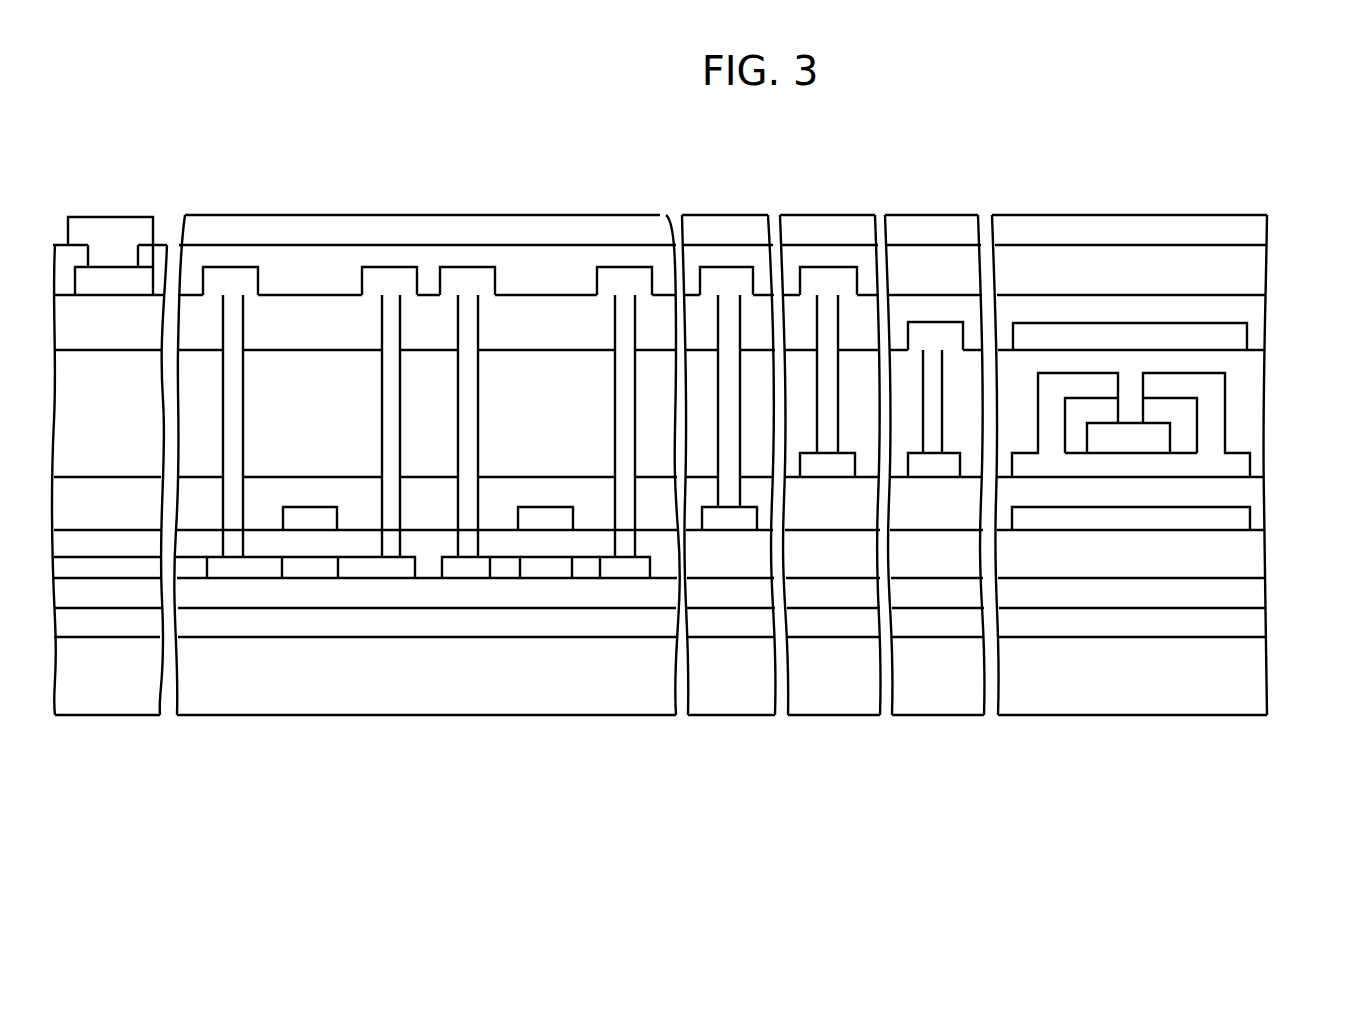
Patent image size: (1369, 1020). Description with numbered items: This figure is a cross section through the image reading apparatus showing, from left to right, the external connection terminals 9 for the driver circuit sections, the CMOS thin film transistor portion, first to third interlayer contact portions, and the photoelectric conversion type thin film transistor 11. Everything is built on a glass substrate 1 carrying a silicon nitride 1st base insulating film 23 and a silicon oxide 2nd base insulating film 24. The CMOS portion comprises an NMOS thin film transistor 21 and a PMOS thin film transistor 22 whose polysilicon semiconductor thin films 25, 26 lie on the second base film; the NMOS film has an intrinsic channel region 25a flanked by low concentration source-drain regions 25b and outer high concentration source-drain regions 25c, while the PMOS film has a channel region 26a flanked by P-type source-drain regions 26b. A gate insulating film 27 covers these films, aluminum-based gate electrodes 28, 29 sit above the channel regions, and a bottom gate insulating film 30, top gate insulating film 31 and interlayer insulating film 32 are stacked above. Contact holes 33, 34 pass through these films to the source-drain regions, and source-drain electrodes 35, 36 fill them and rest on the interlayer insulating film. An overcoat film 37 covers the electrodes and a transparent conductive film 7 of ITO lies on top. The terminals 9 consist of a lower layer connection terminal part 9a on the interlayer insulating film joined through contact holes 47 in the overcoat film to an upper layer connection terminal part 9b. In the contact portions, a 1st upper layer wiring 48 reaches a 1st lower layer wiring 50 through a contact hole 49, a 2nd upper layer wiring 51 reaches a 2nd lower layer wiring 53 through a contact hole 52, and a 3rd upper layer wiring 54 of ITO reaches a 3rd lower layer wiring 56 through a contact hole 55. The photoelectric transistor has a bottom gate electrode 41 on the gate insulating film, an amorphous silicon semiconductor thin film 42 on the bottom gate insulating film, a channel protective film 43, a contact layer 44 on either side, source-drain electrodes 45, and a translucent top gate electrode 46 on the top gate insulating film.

The glass substrate 1 is at (1268, 677).
The transparent conductive film 7 is at (1268, 222).
The external connection terminals 9 is at (148, 135).
The lower layer connection terminal part 9a is at (110, 278).
The upper layer connection terminal part 9b is at (122, 228).
The photoelectric conversion type thin film transistor 11 is at (1048, 528).
The NMOS thin film transistor 21 is at (452, 586).
The PMOS thin film transistor 22 is at (216, 586).
The 1st base insulating film 23 is at (1268, 625).
The 2nd base insulating film 24 is at (1268, 593).
The semiconductor thin film 25 is at (437, 770).
The channel region 25a is at (543, 580).
The source-drain regions 25b is at (507, 580).
The source-drain regions 25c is at (475, 580).
The semiconductor thin film 26 is at (385, 770).
The channel region 26a is at (306, 580).
The source-drain regions 26b is at (262, 580).
The gate insulating film 27 is at (1268, 555).
The gate electrode 28 is at (540, 518).
The gate electrode 29 is at (310, 518).
The bottom gate insulating film 30 is at (1268, 502).
The top gate insulating film 31 is at (1268, 385).
The interlayer insulating film 32 is at (1268, 318).
The contact holes 33 is at (478, 390).
The contact holes 34 is at (243, 390).
The source-drain electrodes 35 is at (467, 282).
The source-drain electrodes 36 is at (232, 282).
The overcoat film 37 is at (1268, 265).
The bottom gate electrode 41 is at (1091, 520).
The semiconductor thin film 42 is at (1170, 468).
The channel protective film 43 is at (1129, 445).
The contact layer 44 is at (1093, 410).
The source-drain electrodes 45 is at (1053, 385).
The top gate electrode 46 is at (1124, 337).
The contact holes 47 is at (95, 260).
The 1st upper layer wiring 48 is at (728, 282).
The contact hole 49 is at (733, 373).
The 1st lower layer wiring 50 is at (727, 520).
The 2nd upper layer wiring 51 is at (830, 282).
The contact hole 52 is at (835, 373).
The 2nd lower layer wiring 53 is at (828, 465).
The 3rd upper layer wiring 54 is at (932, 338).
The contact hole 55 is at (938, 373).
The 3rd lower layer wiring 56 is at (930, 465).